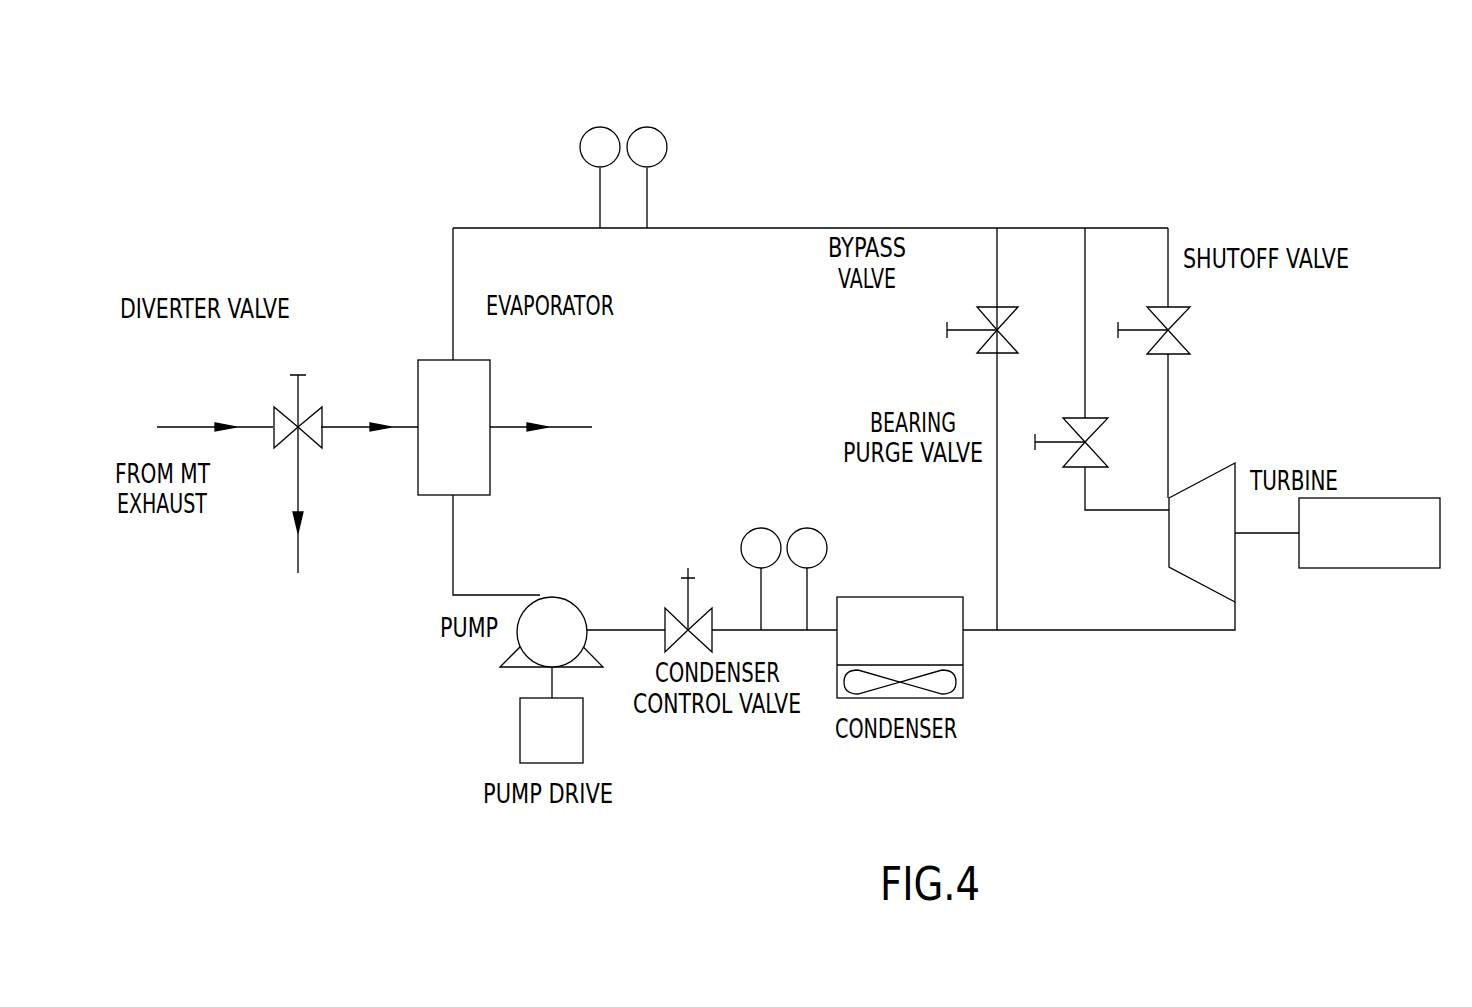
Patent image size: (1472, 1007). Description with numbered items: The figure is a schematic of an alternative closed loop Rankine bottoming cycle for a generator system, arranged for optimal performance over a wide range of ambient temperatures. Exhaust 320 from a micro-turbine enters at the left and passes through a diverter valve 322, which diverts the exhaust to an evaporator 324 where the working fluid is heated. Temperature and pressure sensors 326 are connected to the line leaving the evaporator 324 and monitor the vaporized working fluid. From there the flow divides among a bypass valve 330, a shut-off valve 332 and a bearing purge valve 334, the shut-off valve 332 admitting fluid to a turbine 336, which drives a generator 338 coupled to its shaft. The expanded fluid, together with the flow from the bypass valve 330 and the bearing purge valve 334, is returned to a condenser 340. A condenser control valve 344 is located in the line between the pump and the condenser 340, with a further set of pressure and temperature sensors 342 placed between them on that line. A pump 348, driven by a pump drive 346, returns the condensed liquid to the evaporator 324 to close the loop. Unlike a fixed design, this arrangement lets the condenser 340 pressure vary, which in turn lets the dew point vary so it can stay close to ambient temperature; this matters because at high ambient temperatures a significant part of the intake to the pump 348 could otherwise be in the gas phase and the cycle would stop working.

The exhaust 320 is at (157, 427).
The diverter valve 322 is at (298, 375).
The evaporator 324 is at (490, 388).
The temperature and pressure sensors 326 is at (622, 125).
The bypass valve 330 is at (947, 330).
The shut-off valve 332 is at (1118, 330).
The bearing purge valve 334 is at (1035, 442).
The turbine 336 is at (1235, 463).
The generator 338 is at (1373, 568).
The condenser 340 is at (965, 686).
The pressure and temperature sensors 342 is at (783, 523).
The condenser control valve 344 is at (688, 568).
The pump drive 346 is at (584, 728).
The pump 348 is at (506, 667).